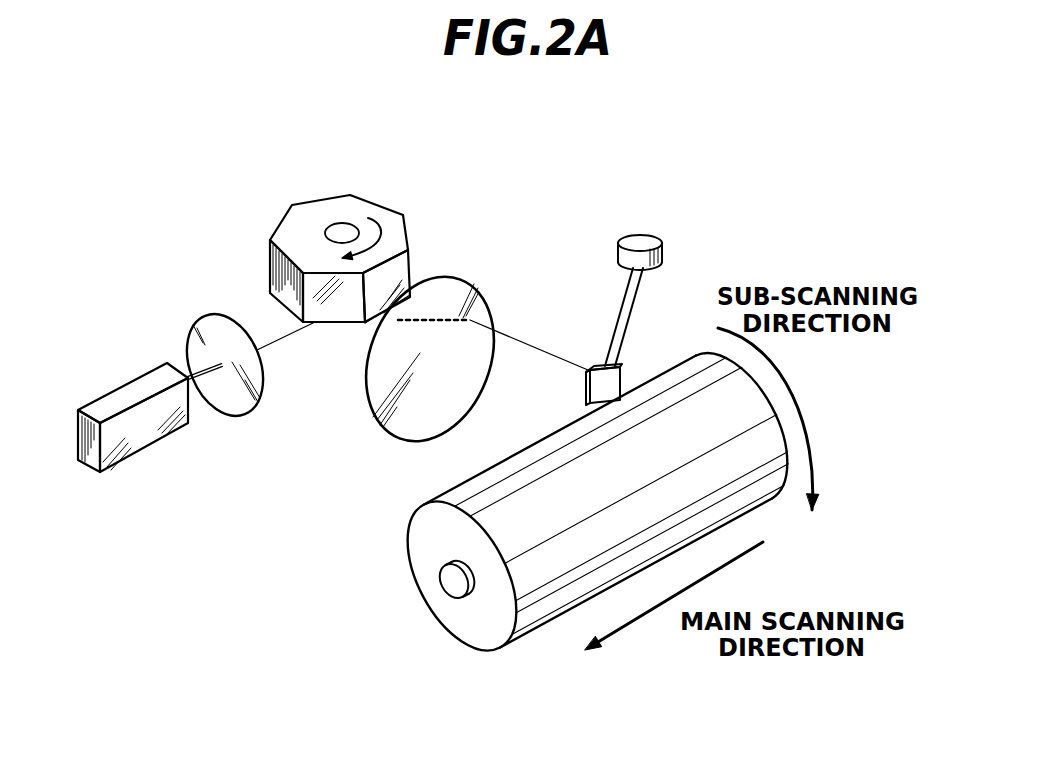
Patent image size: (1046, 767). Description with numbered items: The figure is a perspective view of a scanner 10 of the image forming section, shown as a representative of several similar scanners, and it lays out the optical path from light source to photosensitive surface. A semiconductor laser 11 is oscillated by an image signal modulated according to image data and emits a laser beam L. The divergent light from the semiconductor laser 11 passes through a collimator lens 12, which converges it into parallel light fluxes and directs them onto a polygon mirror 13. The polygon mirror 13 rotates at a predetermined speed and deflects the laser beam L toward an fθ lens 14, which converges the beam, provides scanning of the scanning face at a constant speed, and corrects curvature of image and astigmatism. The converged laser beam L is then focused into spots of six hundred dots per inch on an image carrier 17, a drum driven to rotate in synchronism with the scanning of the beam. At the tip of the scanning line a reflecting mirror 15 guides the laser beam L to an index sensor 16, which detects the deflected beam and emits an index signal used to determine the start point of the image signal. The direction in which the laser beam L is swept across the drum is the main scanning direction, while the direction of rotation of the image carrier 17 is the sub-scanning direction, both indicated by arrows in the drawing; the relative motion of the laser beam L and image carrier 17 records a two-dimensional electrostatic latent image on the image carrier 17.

The scanner 10 is at (528, 182).
The semiconductor laser 11 is at (132, 378).
The collimator lens 12 is at (207, 315).
The polygon mirror 13 is at (332, 195).
The fθ lens 14 is at (460, 277).
The reflecting mirror 15 is at (590, 362).
The index sensor 16 is at (645, 233).
The image carrier 17 is at (678, 360).
The laser beam L is at (290, 340).